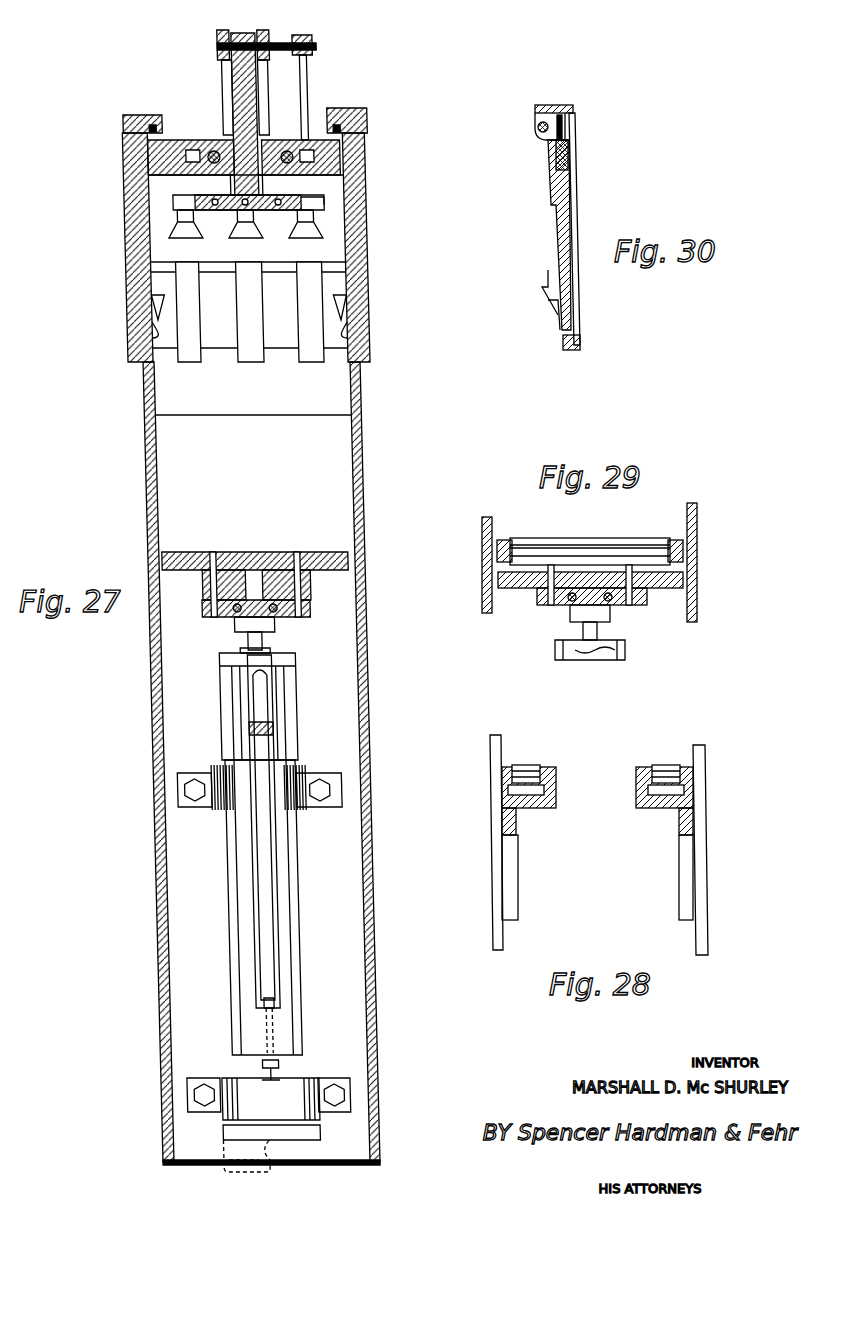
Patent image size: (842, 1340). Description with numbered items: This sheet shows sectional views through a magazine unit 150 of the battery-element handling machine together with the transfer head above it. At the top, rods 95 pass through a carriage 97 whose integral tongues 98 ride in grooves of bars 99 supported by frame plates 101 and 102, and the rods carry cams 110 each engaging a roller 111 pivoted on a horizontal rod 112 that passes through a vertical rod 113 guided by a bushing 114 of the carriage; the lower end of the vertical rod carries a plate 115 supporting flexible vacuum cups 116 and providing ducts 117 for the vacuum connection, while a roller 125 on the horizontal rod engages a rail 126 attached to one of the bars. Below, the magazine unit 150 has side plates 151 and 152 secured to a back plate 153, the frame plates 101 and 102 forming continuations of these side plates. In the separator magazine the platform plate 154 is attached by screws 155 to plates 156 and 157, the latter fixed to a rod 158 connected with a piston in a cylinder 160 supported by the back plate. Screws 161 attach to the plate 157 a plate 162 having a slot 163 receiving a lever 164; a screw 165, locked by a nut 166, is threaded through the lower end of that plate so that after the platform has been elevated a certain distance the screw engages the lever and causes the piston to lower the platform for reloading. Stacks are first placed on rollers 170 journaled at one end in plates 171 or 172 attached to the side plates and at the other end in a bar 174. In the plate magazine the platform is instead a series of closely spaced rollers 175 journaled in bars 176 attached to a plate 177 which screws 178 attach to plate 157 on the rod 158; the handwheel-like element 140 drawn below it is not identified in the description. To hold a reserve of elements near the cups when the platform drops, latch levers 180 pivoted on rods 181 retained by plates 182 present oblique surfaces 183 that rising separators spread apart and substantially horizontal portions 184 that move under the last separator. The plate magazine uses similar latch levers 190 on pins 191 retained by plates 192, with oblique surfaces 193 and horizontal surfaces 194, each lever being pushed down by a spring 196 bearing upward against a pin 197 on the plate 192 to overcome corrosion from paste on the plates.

In FIG. 27, the rods 95 is at (190, 176).
In FIG. 27, the carriage 97 is at (210, 150).
In FIG. 27, the integral tongues 98 is at (188, 148).
In FIG. 27, the bars 99 is at (165, 178).
In FIG. 27, the frame plate 101 is at (361, 190).
In FIG. 30, the frame plate 101 is at (576, 176).
In FIG. 27, the frame plate 102 is at (119, 183).
In FIG. 27, the cams 110 is at (220, 92).
In FIG. 27, the roller 111 is at (219, 31).
In FIG. 27, the horizontal rod 112 is at (216, 47).
In FIG. 27, the vertical rod 113 is at (246, 32).
In FIG. 27, the bushing 114 is at (258, 182).
In FIG. 27, the plate 115 is at (315, 208).
In FIG. 27, the flexible vacuum cups 116 is at (290, 238).
In FIG. 27, the ducts 117 is at (207, 210).
In FIG. 27, the roller 125 is at (312, 38).
In FIG. 27, the rail 126 is at (305, 88).
In FIG. 29, the hand wheel 140 is at (626, 650).
In FIG. 27, the magazine unit 150 is at (243, 763).
In FIG. 27, the side plate 151 is at (351, 432).
In FIG. 29, the side plate 151 is at (697, 526).
In FIG. 28, the side plate 151 is at (708, 770).
In FIG. 27, the side plate 152 is at (134, 418).
In FIG. 29, the side plate 152 is at (482, 538).
In FIG. 28, the side plate 152 is at (490, 768).
In FIG. 27, the back plate 153 is at (240, 415).
In FIG. 27, the platform plate 154 is at (306, 552).
In FIG. 27, the screws 155 is at (199, 552).
In FIG. 27, the plate 156 is at (188, 582).
In FIG. 27, the plate 157 is at (187, 612).
In FIG. 29, the plate 157 is at (647, 597).
In FIG. 27, the rod 158 is at (247, 643).
In FIG. 29, the rod 158 is at (598, 632).
In FIG. 27, the cylinder 160 is at (276, 925).
In FIG. 27, the screws 161 is at (222, 625).
In FIG. 27, the plate 162 is at (268, 870).
In FIG. 27, the slot 163 is at (248, 897).
In FIG. 27, the lever 164 is at (256, 728).
In FIG. 27, the screw 165 is at (250, 1004).
In FIG. 27, the nut 166 is at (252, 1068).
In FIG. 28, the rollers 170 is at (540, 767).
In FIG. 28, the plate 171 is at (679, 825).
In FIG. 28, the plate 172 is at (516, 828).
In FIG. 28, the bar 174 is at (636, 782).
In FIG. 29, the rollers 175 is at (632, 538).
In FIG. 29, the bars 176 is at (505, 540).
In FIG. 29, the plate 177 is at (525, 588).
In FIG. 29, the screws 178 is at (551, 606).
In FIG. 27, the latch levers 180 is at (119, 249).
In FIG. 27, the rods 181 is at (146, 130).
In FIG. 27, the plates 182 is at (150, 115).
In FIG. 27, the oblique surfaces 183 is at (146, 330).
In FIG. 27, the substantially horizontal portions 184 is at (148, 297).
In FIG. 30, the latch levers 190 is at (550, 190).
In FIG. 30, the pins 191 is at (540, 133).
In FIG. 30, the plates 192 is at (573, 108).
In FIG. 30, the oblique surfaces 193 is at (556, 312).
In FIG. 30, the horizontal surfaces 194 is at (548, 283).
In FIG. 30, the spring 196 is at (568, 153).
In FIG. 30, the pin 197 is at (564, 124).